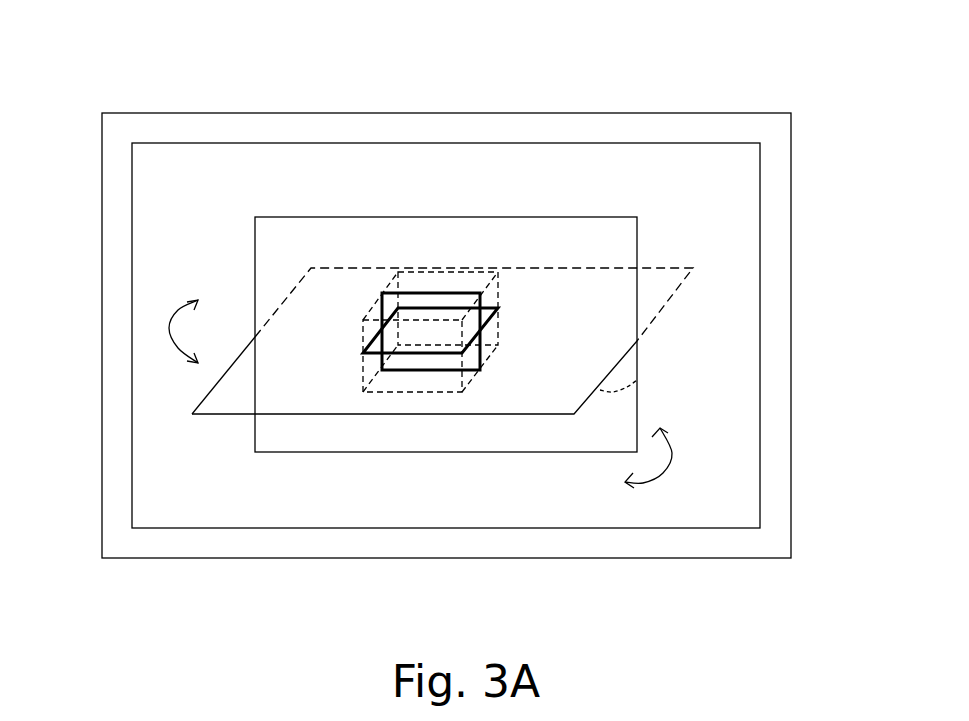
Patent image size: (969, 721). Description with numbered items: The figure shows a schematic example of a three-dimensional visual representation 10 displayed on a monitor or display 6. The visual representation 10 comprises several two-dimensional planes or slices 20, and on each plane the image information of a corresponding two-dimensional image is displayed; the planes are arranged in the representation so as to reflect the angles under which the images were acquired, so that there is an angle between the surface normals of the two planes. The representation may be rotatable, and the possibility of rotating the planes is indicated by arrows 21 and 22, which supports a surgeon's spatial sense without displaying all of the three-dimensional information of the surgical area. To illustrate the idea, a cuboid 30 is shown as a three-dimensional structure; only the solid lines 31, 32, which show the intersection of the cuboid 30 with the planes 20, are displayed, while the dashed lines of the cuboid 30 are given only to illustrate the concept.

The 3D visual representation 10 is at (178, 82).
The monitor or display 6 is at (780, 451).
The arrow 21 is at (668, 470).
The 2D planes or 2D slices 20 is at (588, 268).
The arrow 22 is at (168, 327).
The cuboid 30 is at (443, 393).
The solid line 31 is at (428, 292).
The solid line 32 is at (367, 393).